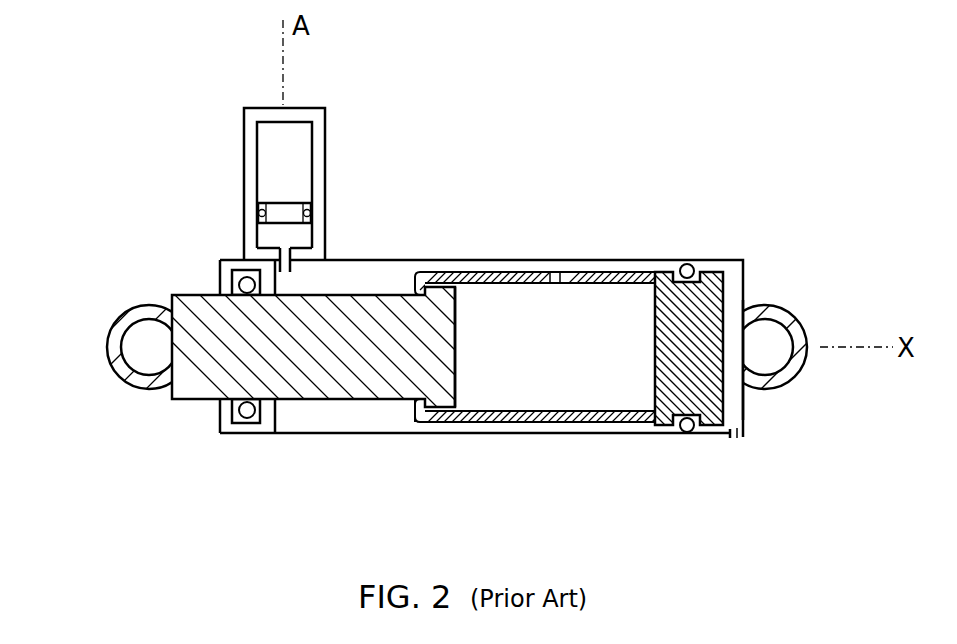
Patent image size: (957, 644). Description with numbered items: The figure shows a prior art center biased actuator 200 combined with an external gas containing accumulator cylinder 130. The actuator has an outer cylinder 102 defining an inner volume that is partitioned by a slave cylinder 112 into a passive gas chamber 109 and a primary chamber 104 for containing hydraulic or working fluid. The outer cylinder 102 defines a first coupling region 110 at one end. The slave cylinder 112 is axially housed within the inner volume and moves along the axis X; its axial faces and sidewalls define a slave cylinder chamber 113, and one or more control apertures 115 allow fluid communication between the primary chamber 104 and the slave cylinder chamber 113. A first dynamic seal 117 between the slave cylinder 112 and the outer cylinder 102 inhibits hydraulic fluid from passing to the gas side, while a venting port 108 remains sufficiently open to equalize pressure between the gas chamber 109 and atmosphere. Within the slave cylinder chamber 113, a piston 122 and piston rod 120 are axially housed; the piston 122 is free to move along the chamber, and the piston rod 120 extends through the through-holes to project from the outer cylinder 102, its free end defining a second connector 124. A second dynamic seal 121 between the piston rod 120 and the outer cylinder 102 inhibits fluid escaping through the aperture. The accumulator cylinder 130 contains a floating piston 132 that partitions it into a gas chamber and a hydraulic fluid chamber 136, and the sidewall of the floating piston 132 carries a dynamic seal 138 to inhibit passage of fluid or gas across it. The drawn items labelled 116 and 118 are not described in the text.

The center biased actuator 200 is at (775, 220).
The outer cylinder 102 is at (483, 260).
The primary chamber 104 is at (378, 273).
The venting port 108 is at (733, 440).
The passive gas chamber 109 is at (737, 400).
The first coupling region 110 is at (786, 310).
The slave cylinder 112 is at (503, 433).
The slave cylinder chamber 113 is at (633, 362).
The control apertures 115 is at (552, 270).
The sleeve 116 is at (628, 273).
The first dynamic seal 117 is at (688, 265).
The rod guide 118 is at (417, 408).
The piston rod 120 is at (283, 380).
The second dynamic seal 121 is at (240, 285).
The piston 122 is at (455, 355).
The second connector 124 is at (107, 345).
The accumulator cylinder 130 is at (338, 119).
The floating piston 132 is at (280, 207).
The hydraulic fluid chamber 136 is at (257, 235).
The dynamic seal 138 is at (312, 212).